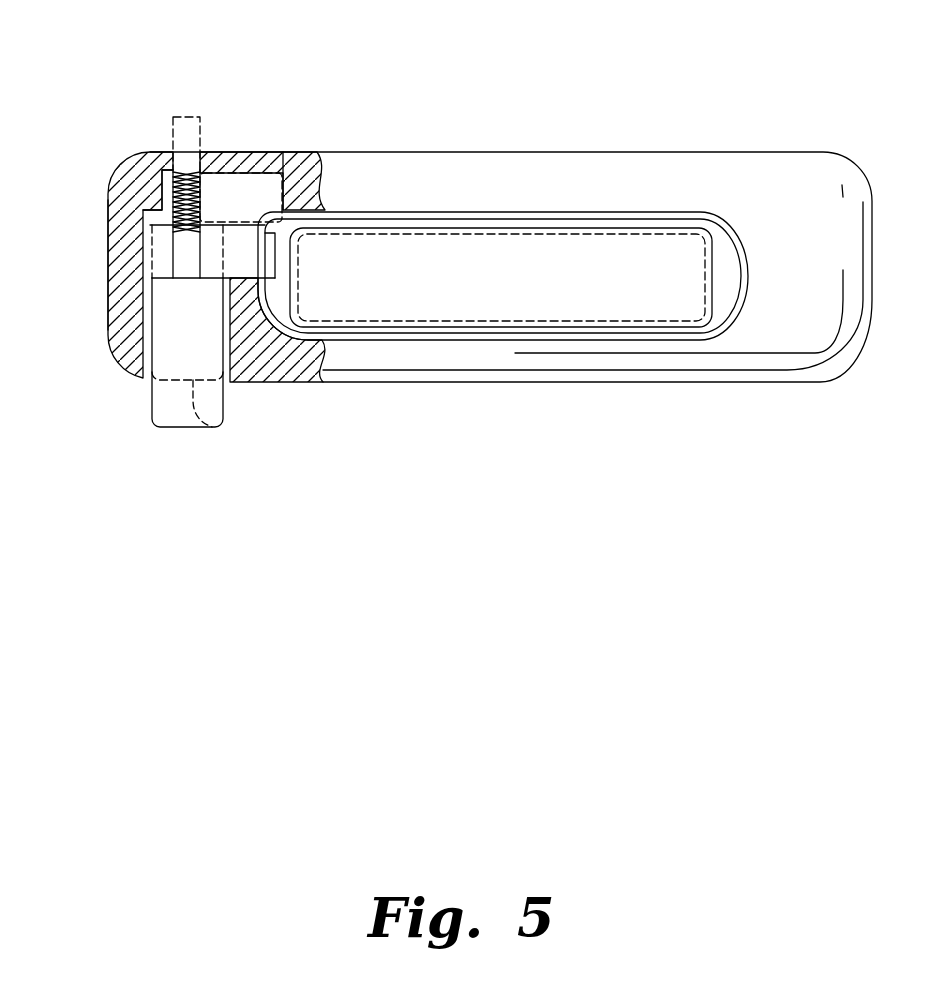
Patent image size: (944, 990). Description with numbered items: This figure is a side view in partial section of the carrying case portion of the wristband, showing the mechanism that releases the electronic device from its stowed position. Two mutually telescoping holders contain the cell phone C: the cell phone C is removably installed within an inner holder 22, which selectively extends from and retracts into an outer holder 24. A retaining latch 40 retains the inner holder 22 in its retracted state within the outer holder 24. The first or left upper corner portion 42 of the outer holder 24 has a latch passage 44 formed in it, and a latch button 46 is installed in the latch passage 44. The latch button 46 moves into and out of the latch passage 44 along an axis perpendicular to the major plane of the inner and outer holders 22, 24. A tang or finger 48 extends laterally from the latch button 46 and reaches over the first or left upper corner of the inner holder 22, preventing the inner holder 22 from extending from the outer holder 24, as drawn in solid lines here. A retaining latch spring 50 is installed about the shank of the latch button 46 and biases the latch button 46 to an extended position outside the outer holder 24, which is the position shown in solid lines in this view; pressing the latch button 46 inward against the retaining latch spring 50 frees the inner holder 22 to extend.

The inner holder 22 is at (372, 210).
The outer holder 24 is at (486, 150).
The cell phone C is at (518, 232).
The retaining latch 40 is at (125, 392).
The first or left upper corner portion 42 is at (108, 240).
The latch passage 44 is at (150, 225).
The latch button 46 is at (188, 427).
The tang or finger 48 is at (290, 215).
The retaining latch spring 50 is at (173, 192).